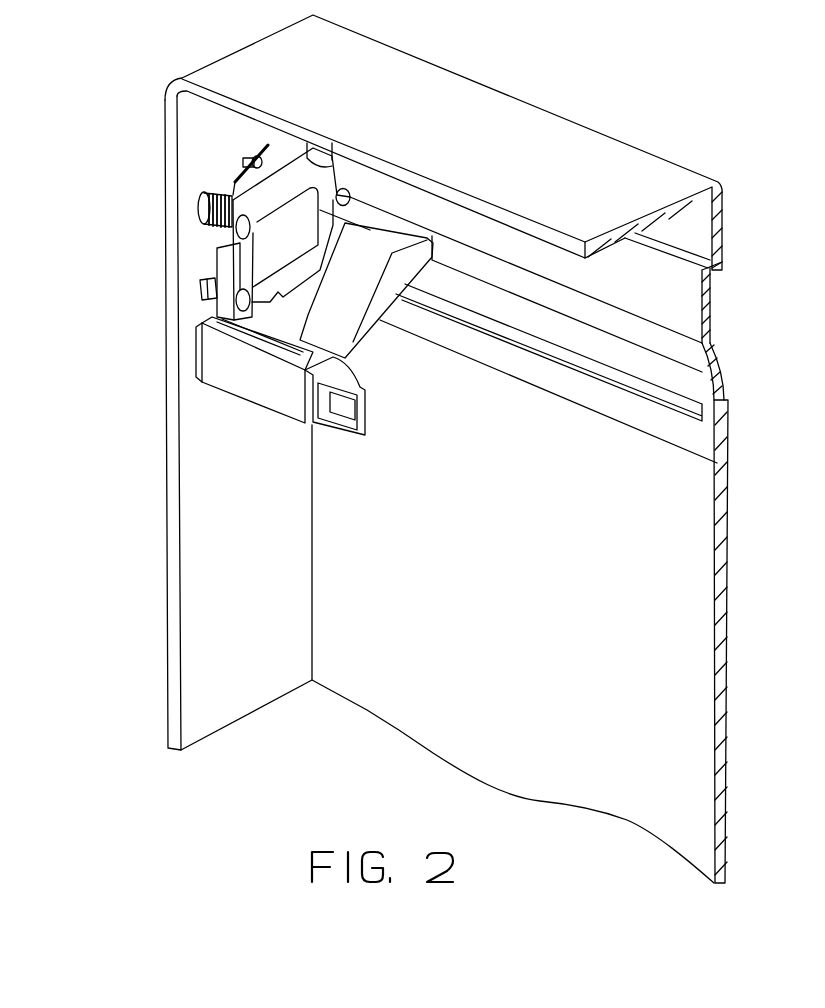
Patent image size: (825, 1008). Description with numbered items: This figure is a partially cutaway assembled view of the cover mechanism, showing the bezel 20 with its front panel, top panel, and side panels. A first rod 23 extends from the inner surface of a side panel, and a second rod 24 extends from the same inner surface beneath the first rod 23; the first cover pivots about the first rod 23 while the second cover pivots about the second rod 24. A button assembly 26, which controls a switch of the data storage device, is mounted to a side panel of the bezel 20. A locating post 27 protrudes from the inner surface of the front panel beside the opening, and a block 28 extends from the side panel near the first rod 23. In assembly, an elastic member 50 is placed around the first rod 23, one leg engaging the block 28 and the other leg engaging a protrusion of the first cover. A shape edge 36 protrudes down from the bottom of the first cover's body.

The bezel 20 is at (556, 150).
The first rod 23 is at (205, 200).
The second rod 24 is at (205, 288).
The button assembly 26 is at (230, 360).
The locating post 27 is at (352, 190).
The block 28 is at (238, 182).
The shape edge 36 is at (713, 327).
The elastic member 50 is at (243, 157).